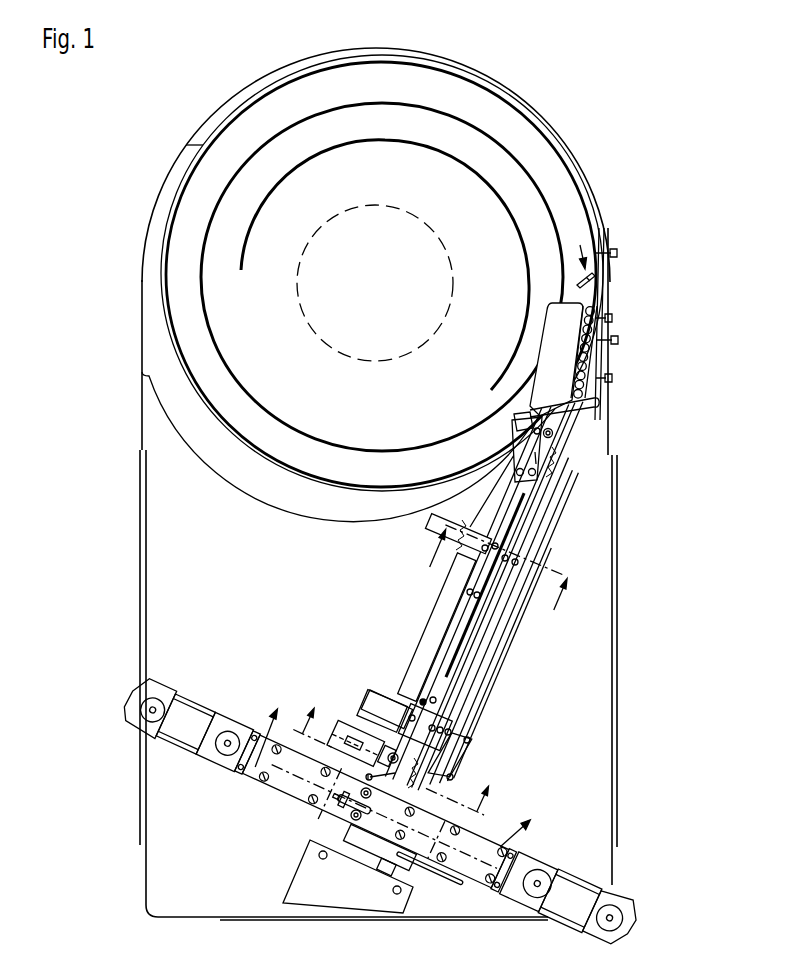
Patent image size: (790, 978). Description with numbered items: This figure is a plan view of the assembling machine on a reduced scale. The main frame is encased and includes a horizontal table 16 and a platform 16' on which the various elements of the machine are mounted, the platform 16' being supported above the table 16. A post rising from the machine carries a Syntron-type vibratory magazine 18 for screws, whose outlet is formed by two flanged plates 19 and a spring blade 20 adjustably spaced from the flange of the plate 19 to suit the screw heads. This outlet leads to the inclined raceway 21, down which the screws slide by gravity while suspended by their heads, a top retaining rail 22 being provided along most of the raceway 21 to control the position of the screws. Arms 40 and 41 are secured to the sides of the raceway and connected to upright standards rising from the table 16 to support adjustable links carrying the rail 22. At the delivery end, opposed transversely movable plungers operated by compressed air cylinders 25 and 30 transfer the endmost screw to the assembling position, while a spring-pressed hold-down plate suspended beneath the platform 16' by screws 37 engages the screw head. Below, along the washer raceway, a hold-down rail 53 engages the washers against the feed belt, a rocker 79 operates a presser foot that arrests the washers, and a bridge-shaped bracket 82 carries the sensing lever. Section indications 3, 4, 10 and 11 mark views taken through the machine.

The parts feeding apparatus 3 is at (670, 756).
The section line 4- 4 is at (389, 791).
The workpieces / section line 10- 10 is at (578, 342).
The section line 11- 11 is at (495, 580).
The horizontal table 16 is at (401, 484).
The platform 16' is at (390, 787).
The magazine 18 is at (583, 176).
The flanged plates 19 is at (536, 388).
The spring blade 20 is at (600, 392).
The raceway 21 is at (543, 508).
The top retaining rail 22 is at (548, 488).
The compressed air cylinder 25 is at (571, 899).
The compressed air cylinder 30 is at (190, 726).
The screws 37 is at (347, 813).
The arm 40 is at (542, 528).
The arm 41 is at (462, 712).
The hold-down rail 53 is at (460, 628).
The rocker 79 is at (365, 742).
The bridge-shaped bracket 82 is at (521, 656).